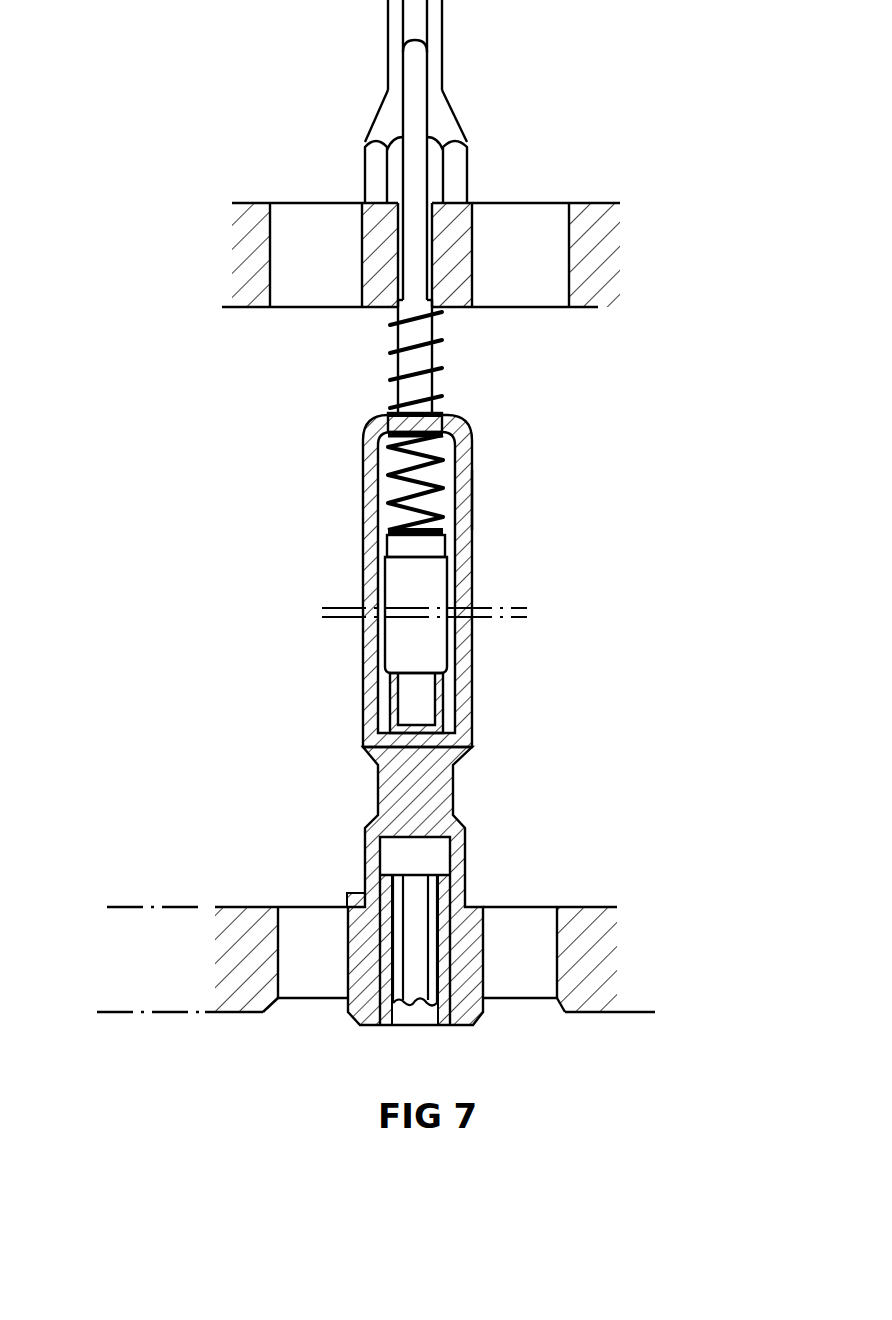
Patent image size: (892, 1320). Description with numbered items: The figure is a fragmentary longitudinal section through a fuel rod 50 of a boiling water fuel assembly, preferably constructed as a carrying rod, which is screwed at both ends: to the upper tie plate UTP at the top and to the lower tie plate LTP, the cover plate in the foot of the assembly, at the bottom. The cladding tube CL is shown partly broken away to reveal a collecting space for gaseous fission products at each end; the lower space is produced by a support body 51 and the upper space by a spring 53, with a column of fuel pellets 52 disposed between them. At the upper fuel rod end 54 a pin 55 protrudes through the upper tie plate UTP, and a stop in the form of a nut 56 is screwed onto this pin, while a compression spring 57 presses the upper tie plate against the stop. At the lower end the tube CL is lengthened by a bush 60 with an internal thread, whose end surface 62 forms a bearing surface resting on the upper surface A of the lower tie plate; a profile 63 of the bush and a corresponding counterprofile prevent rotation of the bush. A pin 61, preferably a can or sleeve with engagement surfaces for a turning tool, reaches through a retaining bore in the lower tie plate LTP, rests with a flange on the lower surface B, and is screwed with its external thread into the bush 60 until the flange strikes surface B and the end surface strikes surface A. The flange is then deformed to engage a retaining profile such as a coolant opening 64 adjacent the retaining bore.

The fuel rod 50 is at (527, 592).
The support body 51 is at (447, 700).
The column of fuel pellets 52 is at (393, 583).
The spring 53 is at (386, 452).
The upper fuel rod end 54 is at (452, 424).
The pin 55 is at (418, 102).
The nut 56 is at (438, 52).
The compression spring 57 is at (396, 360).
The bush 60 is at (466, 832).
The pin 61 is at (450, 1022).
The end surface 62 is at (472, 912).
The profile 63 is at (358, 892).
The coolant opening 64 is at (300, 1014).
The upper tie plate UTP is at (594, 216).
The lower tie plate LTP is at (597, 928).
The cladding tube CL is at (466, 498).
The upper surface A is at (177, 906).
The lower surface B is at (165, 1014).